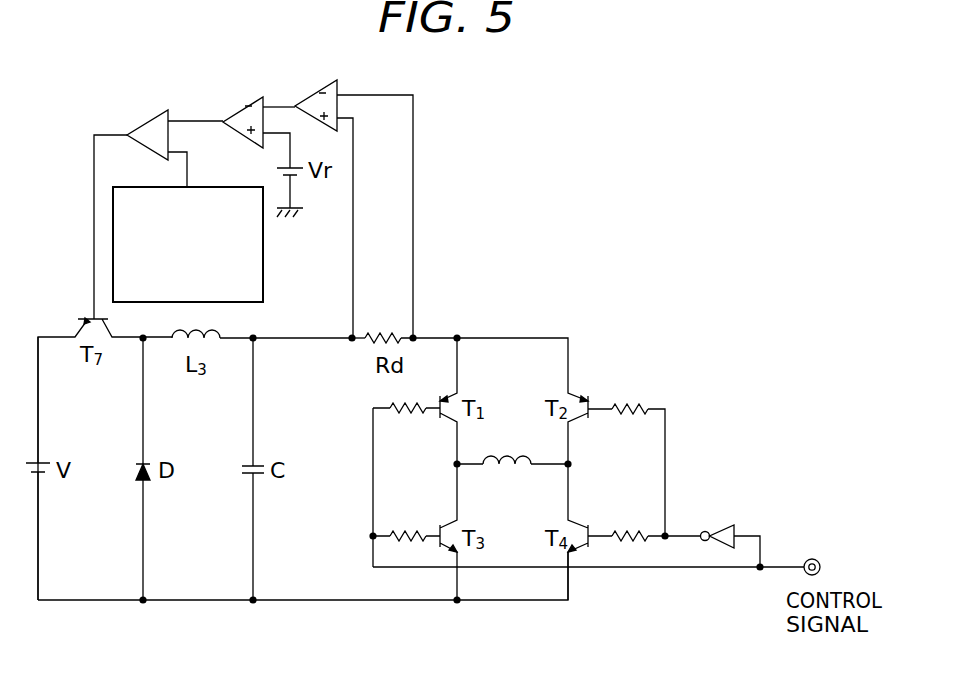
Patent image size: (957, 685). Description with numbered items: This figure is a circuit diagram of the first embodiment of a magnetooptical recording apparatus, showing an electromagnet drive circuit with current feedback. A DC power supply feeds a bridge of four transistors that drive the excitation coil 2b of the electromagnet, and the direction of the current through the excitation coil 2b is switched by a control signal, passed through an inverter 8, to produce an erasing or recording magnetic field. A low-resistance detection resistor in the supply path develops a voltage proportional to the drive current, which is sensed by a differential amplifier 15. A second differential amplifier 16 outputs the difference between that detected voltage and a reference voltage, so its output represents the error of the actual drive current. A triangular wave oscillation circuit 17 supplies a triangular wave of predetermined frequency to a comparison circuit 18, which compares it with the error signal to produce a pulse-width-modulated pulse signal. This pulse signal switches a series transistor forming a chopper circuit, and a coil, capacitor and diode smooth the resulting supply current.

The excitation coil 2b is at (512, 472).
The inverter 8 is at (725, 526).
The differential amplifier 15 is at (317, 89).
The differential amplifier 16 is at (244, 103).
The triangular wave oscillation circuit 17 is at (263, 251).
The comparison circuit 18 is at (147, 119).